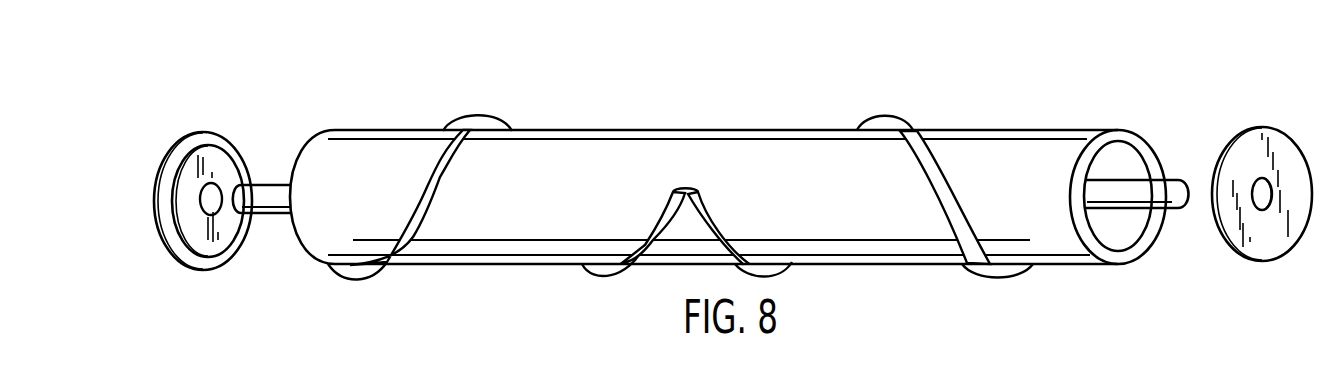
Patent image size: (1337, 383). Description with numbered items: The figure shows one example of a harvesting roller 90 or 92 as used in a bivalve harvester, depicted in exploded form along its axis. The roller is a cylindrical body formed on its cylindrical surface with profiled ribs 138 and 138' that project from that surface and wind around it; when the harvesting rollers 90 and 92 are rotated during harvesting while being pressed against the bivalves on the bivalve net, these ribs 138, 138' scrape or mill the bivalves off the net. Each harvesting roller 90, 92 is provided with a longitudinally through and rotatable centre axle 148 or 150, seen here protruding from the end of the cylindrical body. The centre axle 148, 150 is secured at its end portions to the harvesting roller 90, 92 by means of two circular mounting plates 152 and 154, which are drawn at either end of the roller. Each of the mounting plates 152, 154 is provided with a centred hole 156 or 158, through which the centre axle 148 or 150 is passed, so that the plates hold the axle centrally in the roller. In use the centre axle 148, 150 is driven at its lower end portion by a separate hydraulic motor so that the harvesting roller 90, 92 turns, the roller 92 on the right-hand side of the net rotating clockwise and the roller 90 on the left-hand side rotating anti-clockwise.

The harvesting roller 90 is at (699, 152).
The harvesting roller 92 is at (608, 104).
The profiled rib 138 is at (629, 168).
The profiled rib 138' is at (860, 197).
The centre axle 148 is at (1159, 156).
The centre axle 150 is at (1167, 188).
The circular mounting plate 152 is at (212, 158).
The circular mounting plate 154 is at (1253, 148).
The centred hole 156 is at (212, 203).
The centred hole 158 is at (1265, 203).